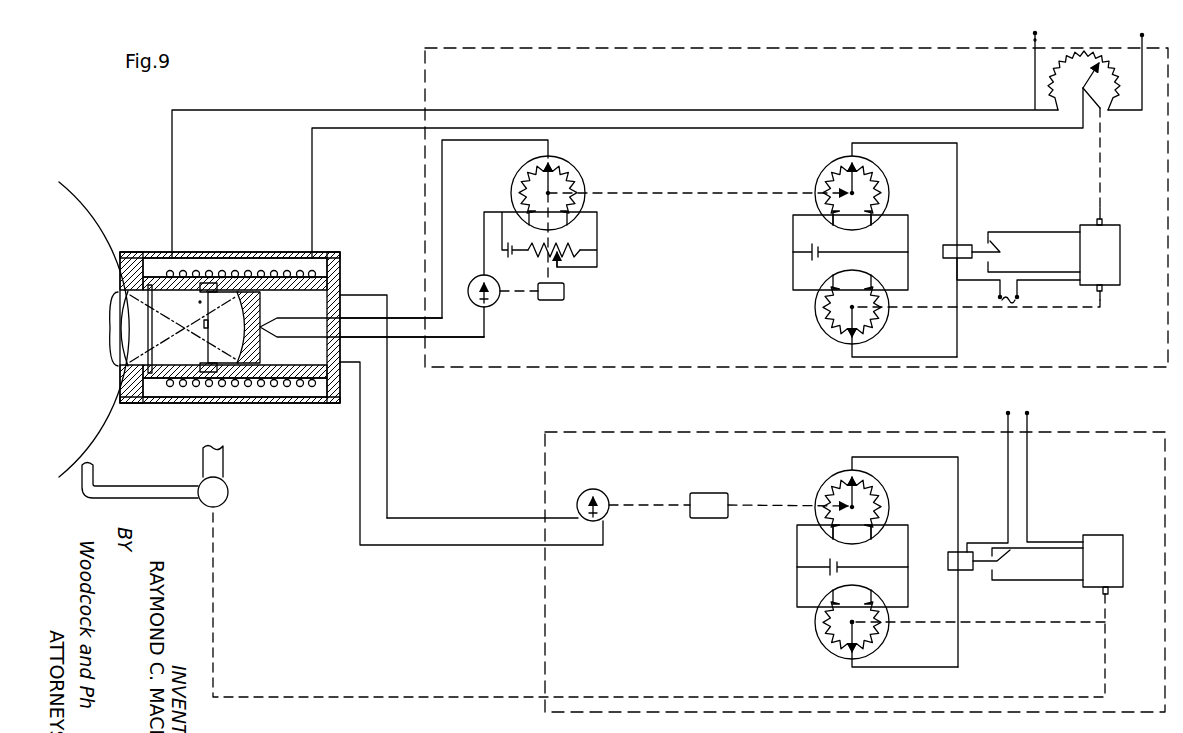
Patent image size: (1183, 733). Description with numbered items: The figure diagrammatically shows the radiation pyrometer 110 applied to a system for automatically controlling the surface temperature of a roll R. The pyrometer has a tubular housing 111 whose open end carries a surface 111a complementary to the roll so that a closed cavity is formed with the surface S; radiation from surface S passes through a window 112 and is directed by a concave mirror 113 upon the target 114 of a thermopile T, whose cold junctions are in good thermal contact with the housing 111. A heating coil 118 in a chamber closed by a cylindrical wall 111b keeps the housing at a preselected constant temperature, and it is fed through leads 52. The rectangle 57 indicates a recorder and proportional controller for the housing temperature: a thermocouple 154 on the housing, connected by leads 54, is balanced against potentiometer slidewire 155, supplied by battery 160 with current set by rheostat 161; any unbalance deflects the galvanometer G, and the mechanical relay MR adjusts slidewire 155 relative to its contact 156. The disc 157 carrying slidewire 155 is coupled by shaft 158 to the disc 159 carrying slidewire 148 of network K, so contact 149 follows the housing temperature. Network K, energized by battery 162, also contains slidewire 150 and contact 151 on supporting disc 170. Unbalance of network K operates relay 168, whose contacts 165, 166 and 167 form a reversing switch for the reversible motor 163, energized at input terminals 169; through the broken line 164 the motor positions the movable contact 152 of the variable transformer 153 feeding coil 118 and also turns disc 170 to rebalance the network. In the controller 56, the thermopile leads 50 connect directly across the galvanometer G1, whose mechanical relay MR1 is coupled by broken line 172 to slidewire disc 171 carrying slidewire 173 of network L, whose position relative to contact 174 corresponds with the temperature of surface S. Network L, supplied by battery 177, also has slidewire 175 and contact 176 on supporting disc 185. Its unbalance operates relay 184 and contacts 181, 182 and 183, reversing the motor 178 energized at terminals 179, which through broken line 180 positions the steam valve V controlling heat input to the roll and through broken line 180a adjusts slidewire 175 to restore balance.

The lead wires 50 is at (466, 515).
The leads 52 is at (358, 110).
The conductors from thermocouple 54 is at (410, 308).
The controller 56 is at (1165, 473).
The rectangle 57 is at (1166, 330).
The radiation pyrometer 110 is at (280, 330).
The tubular housing 111 is at (132, 251).
The surface 111a is at (122, 266).
The cylindrical wall 111b is at (259, 250).
The window 112 is at (151, 341).
The concave mirror 113 is at (244, 337).
The target 114 is at (206, 333).
The heating coil 118 is at (215, 262).
The slidewire 148 is at (868, 178).
The contact 149 is at (850, 162).
The slidewire 150 is at (832, 322).
The contact 151 is at (856, 338).
The movable contact 152 is at (1053, 50).
The variable transformer 153 is at (1106, 62).
The thermocouple 154 is at (262, 327).
The potentiometer slidewire 155 is at (577, 188).
The contact 156 is at (550, 166).
The disc 157 is at (525, 174).
The shaft 158 is at (716, 195).
The disc 159 is at (822, 181).
The battery 160 is at (513, 256).
The rheostat 161 is at (570, 258).
The battery 162 is at (812, 245).
The reversible motor 163 is at (1122, 263).
The broken line 164 is at (1103, 188).
The contact 165 is at (1004, 249).
The contact 166 is at (989, 242).
The contact 167 is at (989, 263).
The relay 168 is at (943, 247).
The input terminals 169 is at (1000, 301).
The supporting disc 170 is at (815, 306).
The slidewire disc 171 is at (818, 491).
The broken line 172 is at (757, 508).
The slidewire 173 is at (890, 482).
The contact 174 is at (851, 473).
The slidewire 175 is at (883, 639).
The contact 176 is at (849, 654).
The battery 177 is at (832, 562).
The reversible motor 178 is at (1123, 561).
The input terminals 179 is at (1006, 415).
The broken line 180 is at (1108, 612).
The broken line 180a is at (1008, 624).
The contact 181 is at (991, 555).
The contact 182 is at (1010, 563).
The contact 183 is at (991, 571).
The relay 184 is at (948, 556).
The supporting disc 185 is at (817, 635).
The roll R is at (90, 217).
The surface S is at (110, 328).
The thermopile T is at (205, 302).
The network K is at (782, 267).
The network L is at (785, 583).
The galvanometer G is at (497, 303).
The galvanometer G1 is at (598, 489).
The steam valve V is at (155, 477).
The mechanical relay MR is at (537, 290).
The mechanical relay MR1 is at (711, 505).